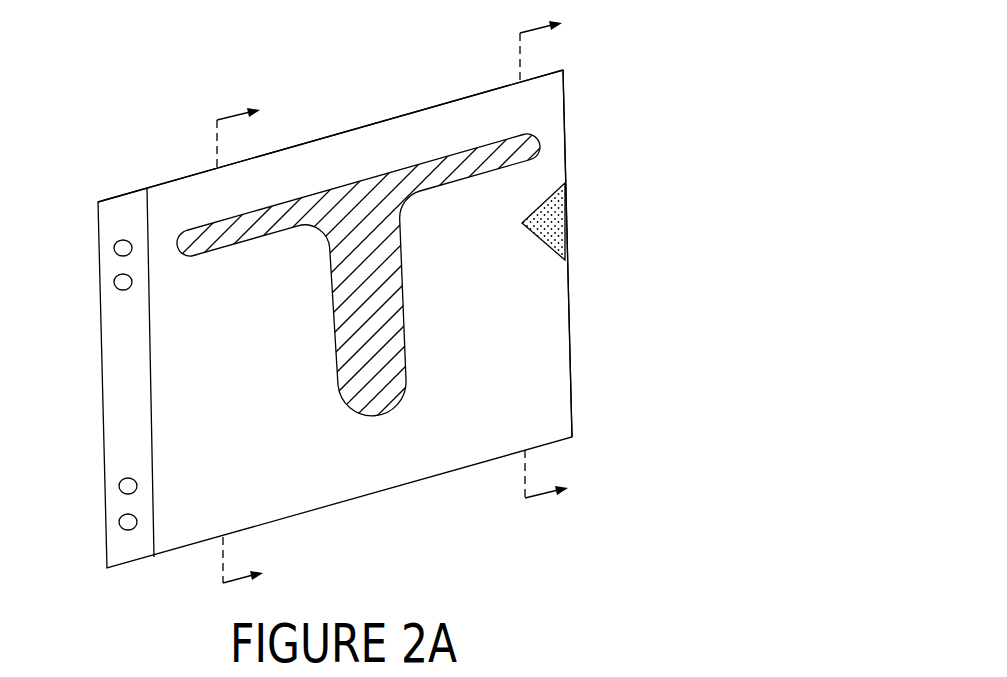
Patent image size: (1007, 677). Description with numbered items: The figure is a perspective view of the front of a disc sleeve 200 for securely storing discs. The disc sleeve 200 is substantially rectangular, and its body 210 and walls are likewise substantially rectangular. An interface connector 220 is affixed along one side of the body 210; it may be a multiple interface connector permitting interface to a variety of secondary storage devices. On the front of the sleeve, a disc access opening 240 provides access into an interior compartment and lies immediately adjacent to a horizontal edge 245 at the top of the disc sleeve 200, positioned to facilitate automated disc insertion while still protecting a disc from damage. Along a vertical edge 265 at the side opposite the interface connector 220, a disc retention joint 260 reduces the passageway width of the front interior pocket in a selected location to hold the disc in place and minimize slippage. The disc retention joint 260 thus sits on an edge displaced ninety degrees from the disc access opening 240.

The disc sleeve 200 is at (129, 147).
The body 210 is at (552, 373).
The interface connector 220 is at (120, 372).
The disc access opening 240 is at (418, 178).
The horizontal edge 245 is at (455, 100).
The disc retention joint 260 is at (557, 223).
The vertical edge 265 is at (568, 320).